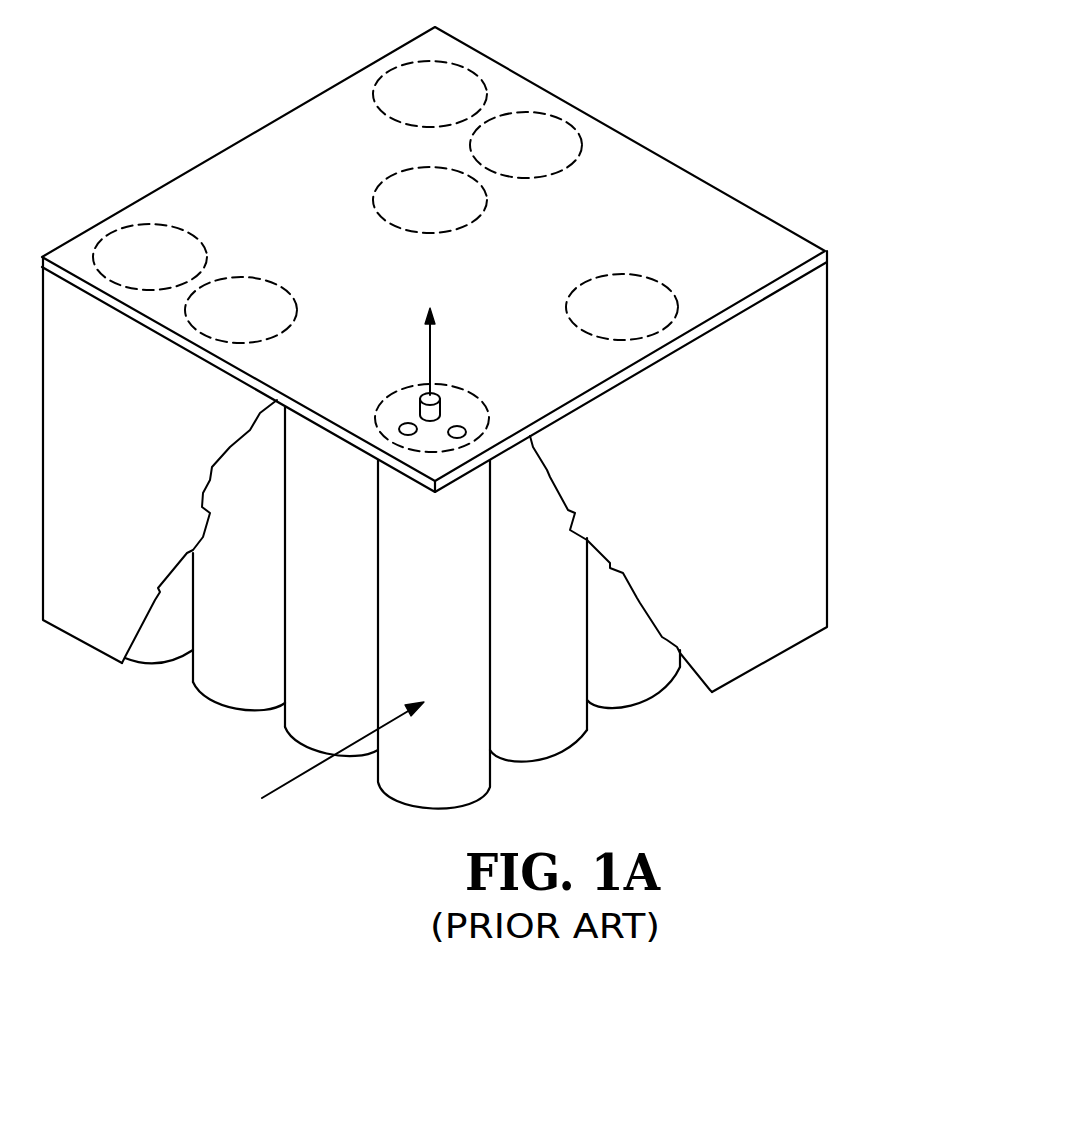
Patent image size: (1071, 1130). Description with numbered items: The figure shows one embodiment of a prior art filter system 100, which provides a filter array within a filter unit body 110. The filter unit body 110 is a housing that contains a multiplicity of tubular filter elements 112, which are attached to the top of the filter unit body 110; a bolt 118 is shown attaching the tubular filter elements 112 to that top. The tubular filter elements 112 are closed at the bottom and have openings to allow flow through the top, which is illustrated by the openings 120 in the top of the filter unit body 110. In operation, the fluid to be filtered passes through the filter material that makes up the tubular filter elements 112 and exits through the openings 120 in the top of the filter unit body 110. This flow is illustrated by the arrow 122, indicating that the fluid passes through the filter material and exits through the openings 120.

The prior art filter system 100 is at (643, 87).
The filter unit body 110 is at (725, 438).
The tubular filter elements 112 is at (520, 153).
The bolt 118 is at (441, 410).
The openings 120 is at (400, 428).
The arrow 122 is at (430, 342).